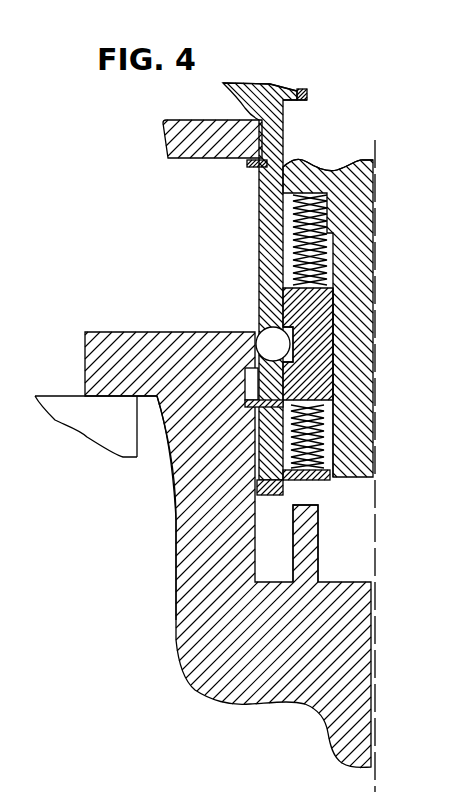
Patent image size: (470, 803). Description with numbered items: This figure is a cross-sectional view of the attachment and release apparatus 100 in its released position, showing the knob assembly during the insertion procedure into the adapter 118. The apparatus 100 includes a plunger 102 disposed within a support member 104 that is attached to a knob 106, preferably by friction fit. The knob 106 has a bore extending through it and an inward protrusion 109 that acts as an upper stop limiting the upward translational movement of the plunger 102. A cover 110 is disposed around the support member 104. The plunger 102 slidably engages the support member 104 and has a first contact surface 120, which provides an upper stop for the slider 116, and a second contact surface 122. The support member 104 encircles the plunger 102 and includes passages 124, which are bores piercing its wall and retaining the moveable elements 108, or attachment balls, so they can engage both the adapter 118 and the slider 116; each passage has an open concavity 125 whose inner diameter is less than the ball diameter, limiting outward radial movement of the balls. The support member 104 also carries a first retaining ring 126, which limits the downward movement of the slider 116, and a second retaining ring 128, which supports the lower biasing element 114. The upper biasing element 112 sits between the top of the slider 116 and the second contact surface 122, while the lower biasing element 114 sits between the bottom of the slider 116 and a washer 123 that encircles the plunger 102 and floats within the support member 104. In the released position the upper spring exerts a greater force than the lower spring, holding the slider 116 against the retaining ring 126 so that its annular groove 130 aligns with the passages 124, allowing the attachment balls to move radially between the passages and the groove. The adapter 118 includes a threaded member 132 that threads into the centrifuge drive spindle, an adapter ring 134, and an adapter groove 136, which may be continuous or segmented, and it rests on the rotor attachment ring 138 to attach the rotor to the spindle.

The attachment and release apparatus 100 is at (125, 108).
The plunger 102 is at (345, 406).
The support member 104 is at (258, 236).
The knob 106 is at (273, 83).
The moveable elements 108 is at (345, 373).
The inward protrusion 109 is at (306, 95).
The cover 110 is at (166, 140).
The upper biasing element 112 is at (337, 283).
The lower biasing element 114 is at (335, 443).
The slider 116 is at (345, 323).
The adapter 118 is at (197, 632).
The first contact surface 120 is at (345, 247).
The second contact surface 122 is at (257, 175).
The washer 123 is at (325, 483).
The passages 124 is at (257, 400).
The open concavity 125 is at (262, 330).
The first retaining ring 126 is at (174, 473).
The second retaining ring 128 is at (182, 513).
The annular groove 130 is at (335, 345).
The threaded member 132 is at (376, 743).
The adapter ring 134 is at (320, 527).
The adapter groove 136 is at (247, 378).
The rotor attachment ring 138 is at (125, 424).